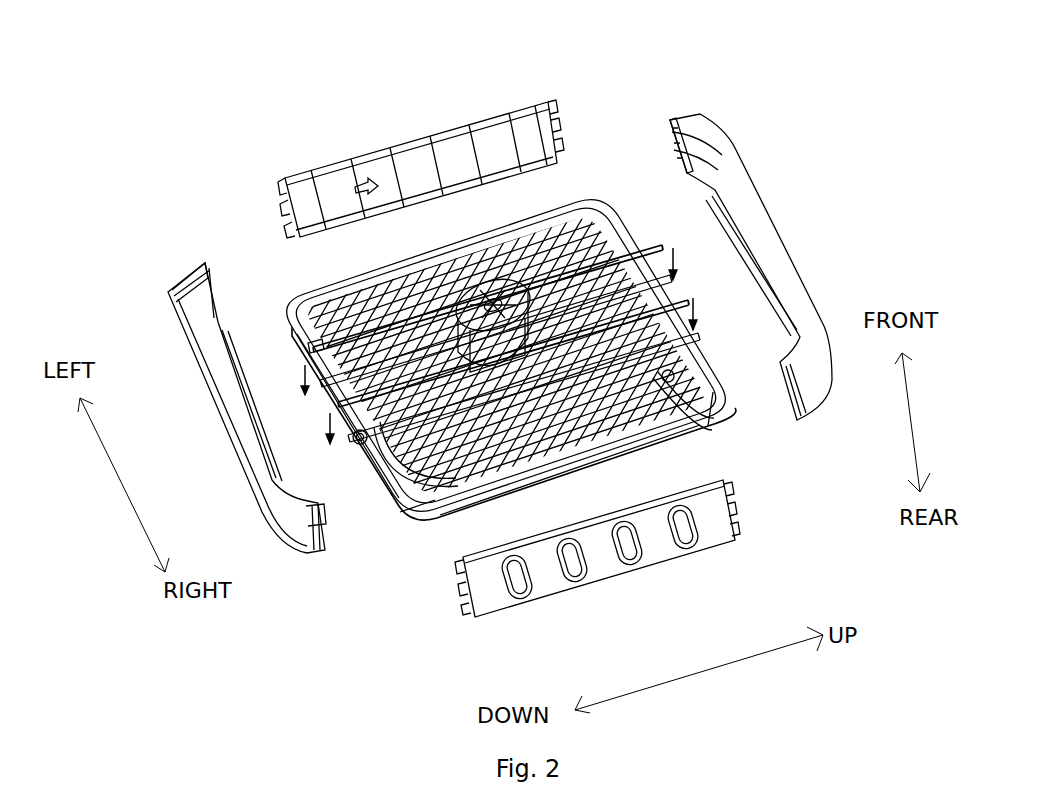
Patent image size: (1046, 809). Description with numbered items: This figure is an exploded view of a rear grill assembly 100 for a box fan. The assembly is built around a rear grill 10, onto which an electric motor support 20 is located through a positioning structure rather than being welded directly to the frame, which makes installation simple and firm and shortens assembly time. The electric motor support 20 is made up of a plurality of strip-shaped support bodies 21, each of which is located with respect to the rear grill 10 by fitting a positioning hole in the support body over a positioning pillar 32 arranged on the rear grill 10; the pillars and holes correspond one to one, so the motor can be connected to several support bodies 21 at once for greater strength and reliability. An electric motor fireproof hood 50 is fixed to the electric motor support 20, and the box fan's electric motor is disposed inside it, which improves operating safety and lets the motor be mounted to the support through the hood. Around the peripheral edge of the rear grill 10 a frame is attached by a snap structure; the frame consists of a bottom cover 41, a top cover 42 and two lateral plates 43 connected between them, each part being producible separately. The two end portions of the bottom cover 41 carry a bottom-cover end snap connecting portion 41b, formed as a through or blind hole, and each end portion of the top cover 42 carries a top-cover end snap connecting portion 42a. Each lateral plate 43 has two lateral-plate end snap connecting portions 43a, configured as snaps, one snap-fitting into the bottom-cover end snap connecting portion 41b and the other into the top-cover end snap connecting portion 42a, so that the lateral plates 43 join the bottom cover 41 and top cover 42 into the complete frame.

The rear grill assembly 100 is at (465, 23).
The rear grill 10 is at (708, 438).
The electric motor support 20 is at (642, 235).
The support body 21 is at (677, 300).
The positioning pillar 32 is at (308, 348).
The bottom cover 41 is at (226, 440).
The bottom-cover end snap connecting portion 41b is at (197, 266).
The top cover 42 is at (795, 268).
The top-cover end snap connecting portion 42a is at (676, 127).
The lateral plate 43 is at (432, 158).
The lateral-plate end snap connecting portion 43a is at (290, 178).
The electric motor fireproof hood 50 is at (552, 210).